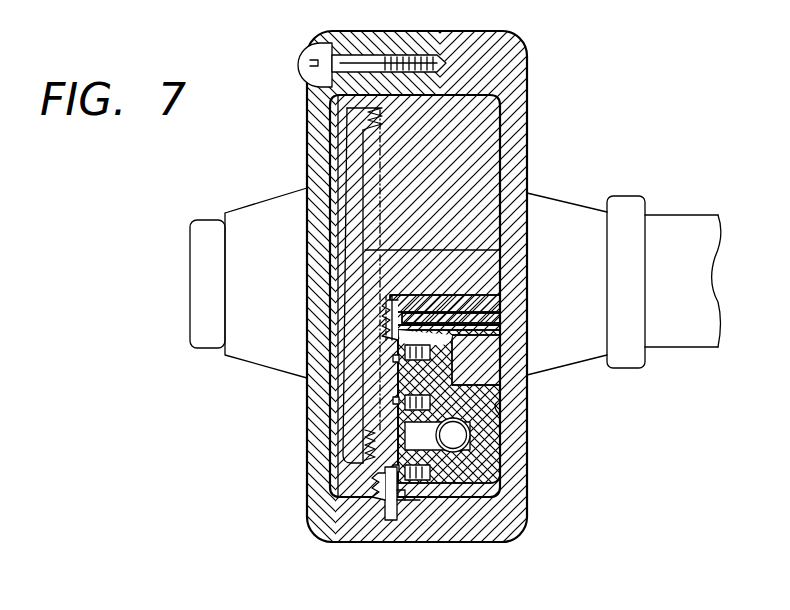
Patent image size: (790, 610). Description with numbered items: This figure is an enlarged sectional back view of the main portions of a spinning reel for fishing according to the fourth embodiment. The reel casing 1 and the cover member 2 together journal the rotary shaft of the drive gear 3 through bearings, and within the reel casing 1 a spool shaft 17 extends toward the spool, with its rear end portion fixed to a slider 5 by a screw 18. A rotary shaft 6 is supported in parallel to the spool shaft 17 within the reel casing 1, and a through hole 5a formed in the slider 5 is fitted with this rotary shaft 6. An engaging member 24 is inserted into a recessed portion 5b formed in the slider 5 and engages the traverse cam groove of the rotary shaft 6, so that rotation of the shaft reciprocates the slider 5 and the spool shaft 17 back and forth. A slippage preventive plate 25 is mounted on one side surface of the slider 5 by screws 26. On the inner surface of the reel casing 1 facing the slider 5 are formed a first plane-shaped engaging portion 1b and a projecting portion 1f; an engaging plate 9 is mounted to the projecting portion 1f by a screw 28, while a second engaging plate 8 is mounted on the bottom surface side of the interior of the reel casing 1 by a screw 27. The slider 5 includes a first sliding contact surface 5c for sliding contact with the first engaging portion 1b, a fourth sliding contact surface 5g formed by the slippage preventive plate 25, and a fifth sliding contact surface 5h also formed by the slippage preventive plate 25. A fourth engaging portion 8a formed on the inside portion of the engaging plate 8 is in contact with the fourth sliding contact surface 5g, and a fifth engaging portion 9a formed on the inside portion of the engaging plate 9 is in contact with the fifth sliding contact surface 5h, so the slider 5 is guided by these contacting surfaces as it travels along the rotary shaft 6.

The reel casing 1 is at (527, 120).
The first plane-shaped engaging portion 1b is at (500, 421).
The projecting portion 1f is at (477, 310).
The cover member 2 is at (307, 108).
The drive gear 3 is at (343, 143).
The slider 5 is at (503, 393).
The through hole 5a is at (397, 498).
The recessed portion 5b is at (492, 468).
The first sliding contact surface 5c is at (480, 442).
The fourth sliding contact surface 5g is at (400, 500).
The fifth sliding contact surface 5h is at (392, 344).
The rotary shaft 6 is at (468, 452).
The engaging plate 8 is at (375, 507).
The fourth engaging portion 8a is at (420, 497).
The engaging plate 9 is at (383, 332).
The fifth engaging portion 9a is at (400, 320).
The spool shaft 17 is at (442, 322).
The screw 18 is at (413, 323).
The engaging member 24 is at (400, 413).
The slippage preventive plate 25 is at (415, 363).
The screws 26 is at (405, 393).
The screw 27 is at (373, 473).
The screw 28 is at (384, 304).